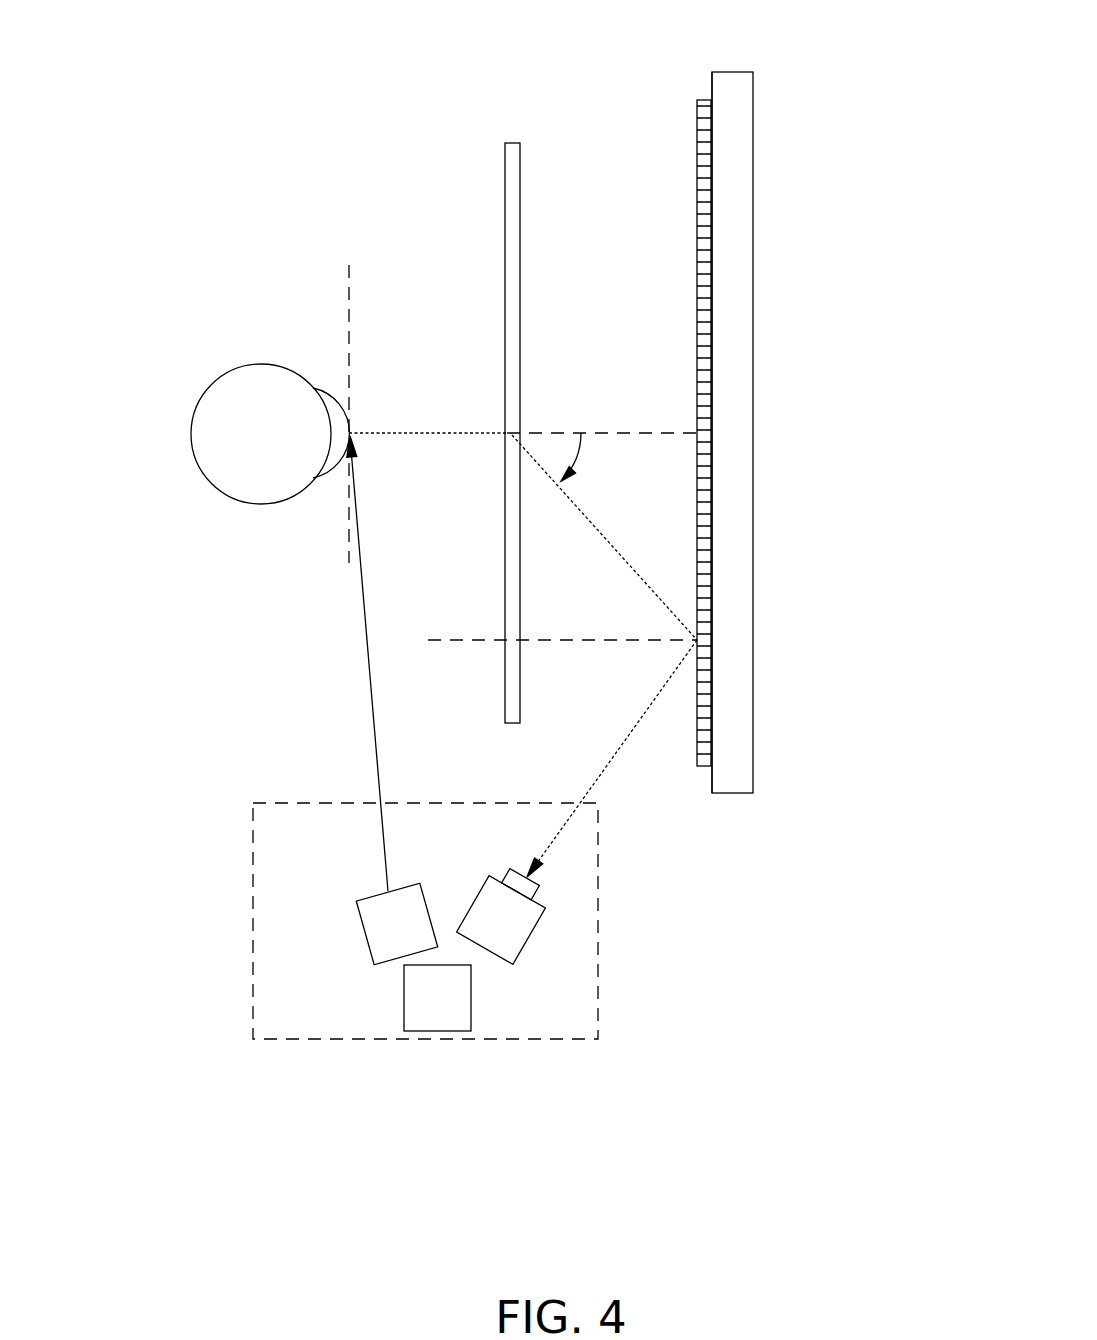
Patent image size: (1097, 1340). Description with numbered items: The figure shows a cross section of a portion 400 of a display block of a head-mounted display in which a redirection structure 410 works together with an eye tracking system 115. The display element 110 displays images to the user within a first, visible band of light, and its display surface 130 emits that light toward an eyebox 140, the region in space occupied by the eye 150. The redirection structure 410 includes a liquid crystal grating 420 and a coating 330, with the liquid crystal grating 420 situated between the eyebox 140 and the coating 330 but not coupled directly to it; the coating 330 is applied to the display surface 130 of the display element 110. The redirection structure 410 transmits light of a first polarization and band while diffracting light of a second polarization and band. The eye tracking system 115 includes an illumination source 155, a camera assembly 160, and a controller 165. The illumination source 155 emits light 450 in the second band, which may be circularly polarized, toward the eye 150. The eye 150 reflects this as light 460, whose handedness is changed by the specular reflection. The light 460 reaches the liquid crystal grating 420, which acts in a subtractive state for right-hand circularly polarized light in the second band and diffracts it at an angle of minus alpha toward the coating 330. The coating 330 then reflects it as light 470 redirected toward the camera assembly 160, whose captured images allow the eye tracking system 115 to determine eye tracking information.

The portion of a display block 400 is at (203, 82).
The redirection structure 410 is at (512, 142).
The liquid crystal grating 420 is at (505, 240).
The display element 110 is at (753, 222).
The coating 330 is at (703, 333).
The display surface 130 is at (712, 793).
The eyebox 140 is at (349, 352).
The eye 150 is at (270, 473).
The light 460 is at (447, 427).
The light 450 is at (372, 675).
The light 470 is at (632, 730).
The eye tracking system 115 is at (253, 1007).
The illumination source 155 is at (360, 932).
The camera assembly 160 is at (532, 935).
The controller 165 is at (437, 1030).